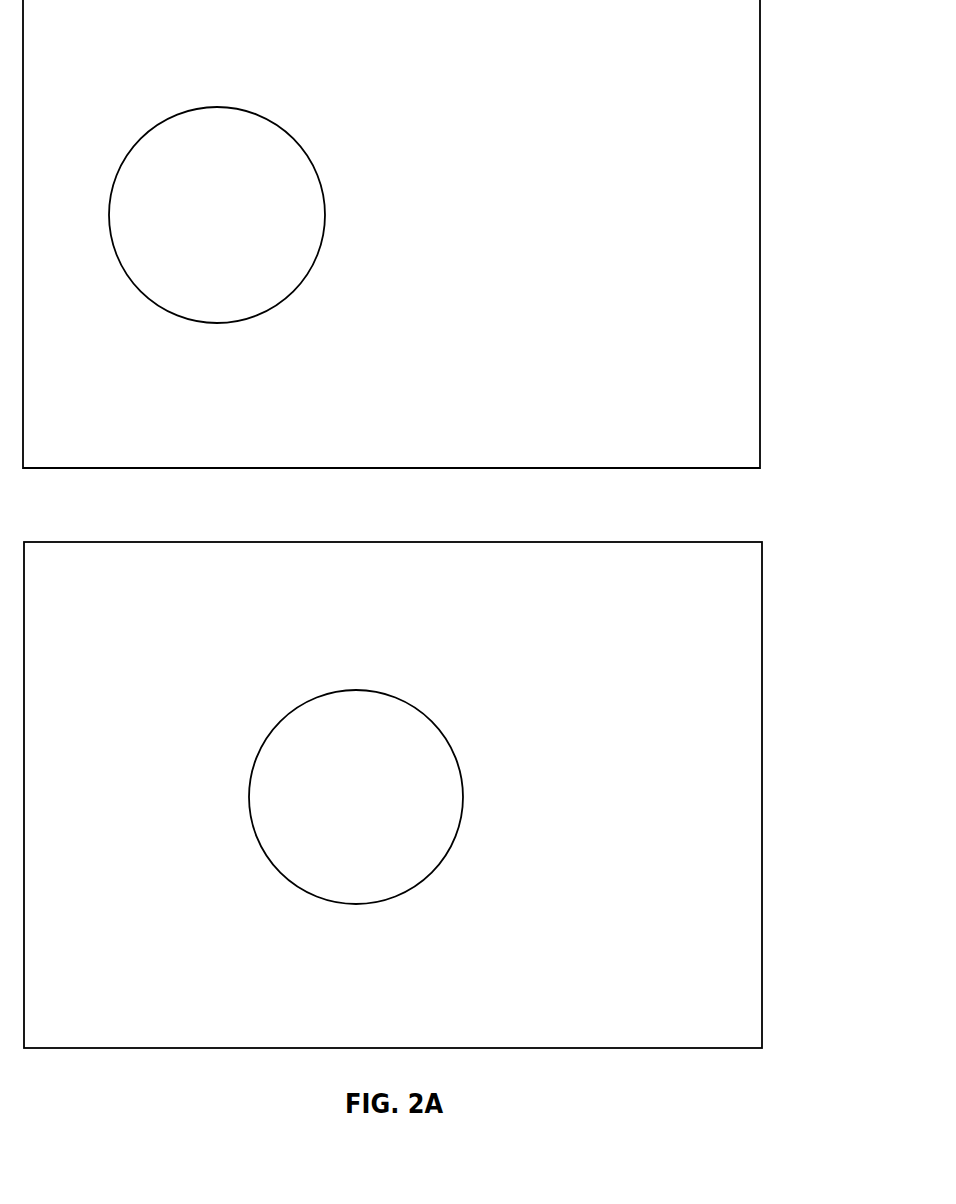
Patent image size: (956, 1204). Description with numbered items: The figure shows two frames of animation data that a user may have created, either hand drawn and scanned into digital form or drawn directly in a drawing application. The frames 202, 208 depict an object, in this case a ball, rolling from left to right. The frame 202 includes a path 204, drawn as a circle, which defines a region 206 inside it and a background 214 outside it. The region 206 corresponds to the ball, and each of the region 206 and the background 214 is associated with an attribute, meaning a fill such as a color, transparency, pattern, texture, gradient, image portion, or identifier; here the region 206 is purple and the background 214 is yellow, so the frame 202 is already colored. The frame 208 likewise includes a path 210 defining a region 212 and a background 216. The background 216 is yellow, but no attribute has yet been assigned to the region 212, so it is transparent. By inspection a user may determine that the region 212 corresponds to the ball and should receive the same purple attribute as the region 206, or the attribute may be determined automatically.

The frame 202 is at (760, 417).
The path 204 is at (297, 285).
The region 206 is at (238, 226).
The background 214 is at (581, 205).
The frame 208 is at (762, 998).
The path 210 is at (437, 867).
The region 212 is at (377, 810).
The background 216 is at (672, 750).